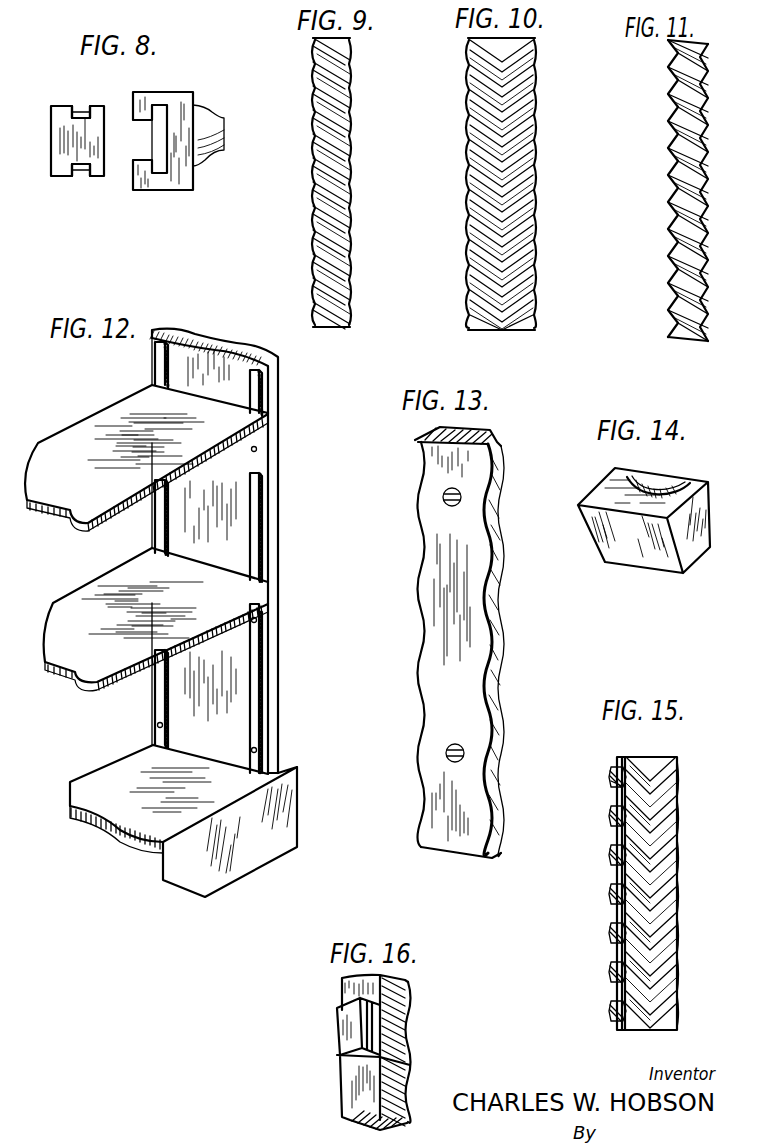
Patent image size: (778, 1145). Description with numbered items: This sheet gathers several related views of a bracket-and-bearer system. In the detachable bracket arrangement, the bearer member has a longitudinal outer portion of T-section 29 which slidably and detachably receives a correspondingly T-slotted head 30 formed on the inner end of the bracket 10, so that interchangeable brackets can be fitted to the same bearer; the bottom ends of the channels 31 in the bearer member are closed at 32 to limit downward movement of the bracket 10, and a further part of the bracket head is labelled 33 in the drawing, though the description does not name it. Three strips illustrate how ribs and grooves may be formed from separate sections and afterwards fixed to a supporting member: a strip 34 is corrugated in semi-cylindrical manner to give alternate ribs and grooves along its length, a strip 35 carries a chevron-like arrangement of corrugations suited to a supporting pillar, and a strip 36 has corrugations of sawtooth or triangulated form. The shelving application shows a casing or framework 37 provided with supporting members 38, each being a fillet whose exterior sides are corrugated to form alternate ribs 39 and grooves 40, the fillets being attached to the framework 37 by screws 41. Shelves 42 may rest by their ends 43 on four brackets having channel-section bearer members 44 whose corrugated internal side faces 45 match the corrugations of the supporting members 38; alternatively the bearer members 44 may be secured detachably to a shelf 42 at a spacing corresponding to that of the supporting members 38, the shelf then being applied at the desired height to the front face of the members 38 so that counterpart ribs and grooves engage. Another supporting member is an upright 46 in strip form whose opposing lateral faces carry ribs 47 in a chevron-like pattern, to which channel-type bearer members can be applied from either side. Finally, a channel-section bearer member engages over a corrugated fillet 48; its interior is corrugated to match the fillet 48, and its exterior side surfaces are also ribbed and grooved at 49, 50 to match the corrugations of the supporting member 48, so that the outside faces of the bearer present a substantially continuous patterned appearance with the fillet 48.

In FIG. 8, the bracket 10 is at (212, 140).
In FIG. 8, the longitudinal outer portion of T-section 29 is at (98, 147).
In FIG. 16, the longitudinal outer portion of T-section 29 is at (343, 1046).
In FIG. 8, the T-slotted head 30 is at (165, 130).
In FIG. 8, the channels 31 is at (78, 162).
In FIG. 8, the closed bottom ends of channels 32 is at (75, 112).
In FIG. 8, the slot opening 33 is at (141, 123).
In FIG. 9, the strip 34 is at (343, 51).
In FIG. 10, the strip 35 is at (530, 148).
In FIG. 11, the strip 36 is at (697, 115).
In FIG. 12, the casing or framework 37 is at (278, 474).
In FIG. 12, the supporting members 38 is at (256, 477).
In FIG. 13, the supporting members 38 is at (440, 568).
In FIG. 13, the ribs 39 is at (492, 513).
In FIG. 13, the grooves 40 is at (480, 529).
In FIG. 13, the screws 41 is at (442, 498).
In FIG. 12, the shelves 42 is at (147, 398).
In FIG. 12, the shelf ends 43 is at (197, 388).
In FIG. 14, the bearer members 44 is at (600, 538).
In FIG. 14, the corrugated internal side faces 45 is at (690, 482).
In FIG. 15, the upright 46 is at (656, 770).
In FIG. 15, the ribs 47 is at (612, 774).
In FIG. 16, the corrugated fillet 48 is at (347, 993).
In FIG. 16, the exterior ribbing and grooving of bearer member 49 is at (407, 1062).
In FIG. 16, the exterior ribbing and grooving of bearer member 50 is at (400, 1037).